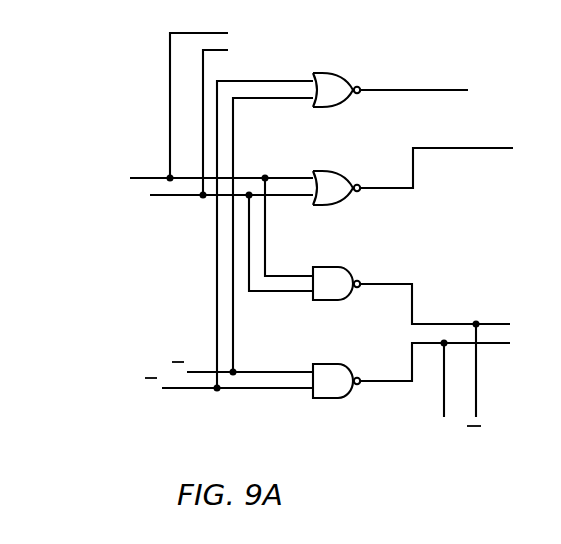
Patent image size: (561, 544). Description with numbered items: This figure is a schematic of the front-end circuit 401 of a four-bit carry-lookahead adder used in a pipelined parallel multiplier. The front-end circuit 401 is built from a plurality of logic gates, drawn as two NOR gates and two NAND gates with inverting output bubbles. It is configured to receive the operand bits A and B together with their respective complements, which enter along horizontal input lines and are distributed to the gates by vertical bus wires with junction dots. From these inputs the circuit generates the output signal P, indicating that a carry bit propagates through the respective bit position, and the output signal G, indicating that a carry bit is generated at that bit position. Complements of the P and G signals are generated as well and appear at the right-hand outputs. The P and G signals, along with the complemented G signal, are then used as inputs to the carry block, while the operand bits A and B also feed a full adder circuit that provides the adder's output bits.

The front-end circuit 401 is at (122, 84).
The operand bit A is at (213, 221).
The operand bit B is at (223, 237).
The generate signal G is at (402, 90).
The propagate signal P is at (530, 140).